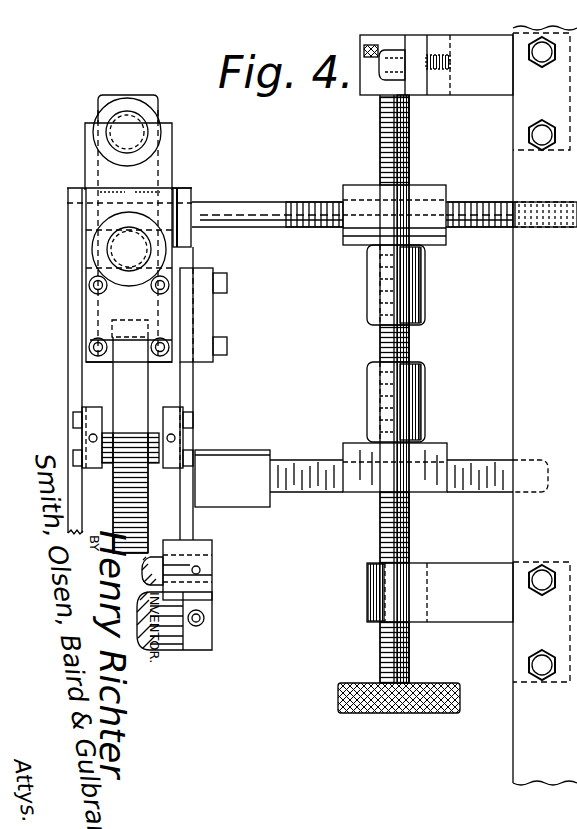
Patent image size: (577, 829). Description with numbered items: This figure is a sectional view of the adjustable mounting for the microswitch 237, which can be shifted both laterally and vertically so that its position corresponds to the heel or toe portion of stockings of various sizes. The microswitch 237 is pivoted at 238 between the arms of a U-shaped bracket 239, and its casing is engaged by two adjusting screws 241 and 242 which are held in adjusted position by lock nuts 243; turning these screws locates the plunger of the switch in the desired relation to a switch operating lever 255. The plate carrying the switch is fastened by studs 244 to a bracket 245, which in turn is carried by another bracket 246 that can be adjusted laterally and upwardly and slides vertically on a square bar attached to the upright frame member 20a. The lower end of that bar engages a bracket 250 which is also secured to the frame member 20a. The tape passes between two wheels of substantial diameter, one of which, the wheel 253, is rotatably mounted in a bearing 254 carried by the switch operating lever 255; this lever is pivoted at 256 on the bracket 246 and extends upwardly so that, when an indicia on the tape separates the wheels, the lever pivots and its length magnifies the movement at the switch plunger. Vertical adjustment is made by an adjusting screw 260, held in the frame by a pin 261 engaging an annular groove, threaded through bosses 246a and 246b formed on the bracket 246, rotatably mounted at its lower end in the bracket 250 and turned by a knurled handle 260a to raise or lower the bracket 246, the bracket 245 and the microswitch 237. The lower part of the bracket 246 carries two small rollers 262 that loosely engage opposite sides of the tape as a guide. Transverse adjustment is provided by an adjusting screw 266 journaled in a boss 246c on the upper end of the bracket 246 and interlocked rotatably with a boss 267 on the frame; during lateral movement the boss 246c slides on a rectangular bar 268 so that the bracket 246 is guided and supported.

The upright frame member 20a is at (572, 428).
The microswitch 237 is at (100, 99).
The pivot 238 is at (92, 186).
The U-shaped bracket 239 is at (167, 163).
The adjusting screw 241 is at (118, 136).
The adjusting screw 242 is at (125, 249).
The lock nuts 243 is at (140, 108).
The studs 244 is at (90, 346).
The bracket 245 is at (210, 358).
The bracket 246 is at (185, 391).
The boss 246a is at (370, 316).
The boss 246b is at (370, 377).
The boss 246c is at (358, 488).
The bracket 250 is at (497, 608).
The wheel 253 is at (124, 382).
The bearing 254 is at (195, 437).
The switch operating lever 255 is at (175, 497).
The pivot 256 is at (150, 566).
The adjusting screw 260 is at (410, 535).
The knurled handle 260a is at (443, 713).
The pin 261 is at (378, 68).
The small rollers 262 is at (165, 650).
The adjusting screw 266 is at (483, 229).
The boss 267 is at (433, 192).
The rectangular bar 268 is at (310, 470).